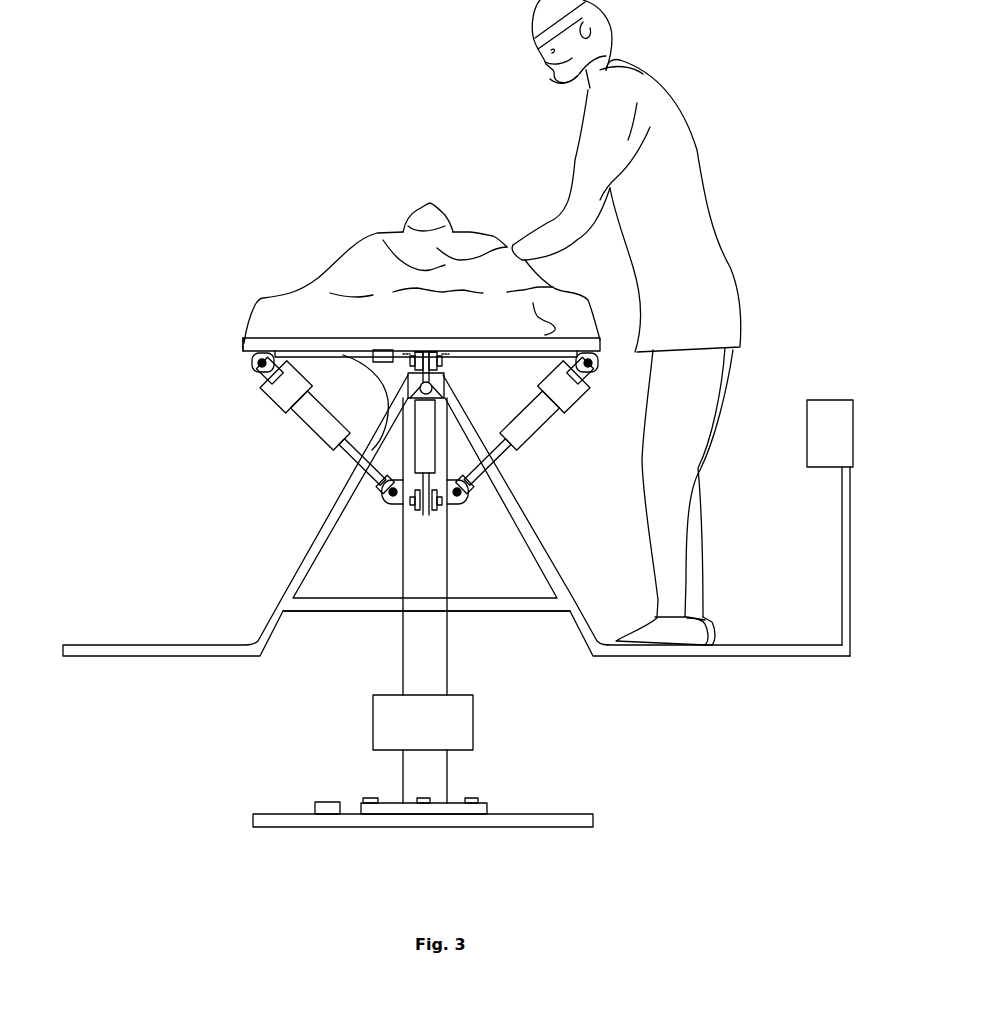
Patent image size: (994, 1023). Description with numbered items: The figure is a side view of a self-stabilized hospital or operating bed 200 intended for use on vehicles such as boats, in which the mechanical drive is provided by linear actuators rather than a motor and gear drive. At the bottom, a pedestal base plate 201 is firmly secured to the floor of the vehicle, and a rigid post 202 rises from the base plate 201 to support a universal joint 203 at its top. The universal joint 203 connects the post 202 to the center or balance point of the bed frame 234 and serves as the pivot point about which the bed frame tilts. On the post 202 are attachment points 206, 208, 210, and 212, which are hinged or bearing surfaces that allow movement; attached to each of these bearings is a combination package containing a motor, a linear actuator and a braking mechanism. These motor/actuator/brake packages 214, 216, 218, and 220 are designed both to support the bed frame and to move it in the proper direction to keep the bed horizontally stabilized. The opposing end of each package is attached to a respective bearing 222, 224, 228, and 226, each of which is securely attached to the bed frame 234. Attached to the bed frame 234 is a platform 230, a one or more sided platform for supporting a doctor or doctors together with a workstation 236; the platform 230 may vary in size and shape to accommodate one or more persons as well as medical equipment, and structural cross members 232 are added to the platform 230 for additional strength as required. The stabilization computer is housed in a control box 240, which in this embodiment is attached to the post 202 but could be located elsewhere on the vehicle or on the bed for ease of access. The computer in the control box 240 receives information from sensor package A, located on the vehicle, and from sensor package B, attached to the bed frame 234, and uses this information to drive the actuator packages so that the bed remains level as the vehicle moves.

The self-stabilized bed 200 is at (318, 270).
The pedestal base plate 201 is at (487, 801).
The rigid post 202 is at (441, 655).
The universal joint 203 is at (446, 380).
The attachment point 206 is at (392, 500).
The attachment point 208 is at (463, 507).
The attachment point 210 is at (424, 513).
The attachment point 212 is at (440, 510).
The motor/actuator/brake package 214 is at (325, 428).
The motor/actuator/brake package 216 is at (527, 428).
The motor/actuator/brake package 218 is at (422, 437).
The motor/actuator/brake package 220 is at (402, 458).
The bearing 222 is at (253, 358).
The bearing 224 is at (600, 362).
The bearing 226 is at (438, 354).
The bearing 228 is at (423, 354).
The platform 230 is at (512, 495).
The structural cross members 232 is at (362, 607).
The bed frame 234 is at (245, 347).
The workstation 236 is at (820, 403).
The control box 240 is at (465, 710).
The sensor package A is at (315, 806).
The sensor package B is at (387, 357).